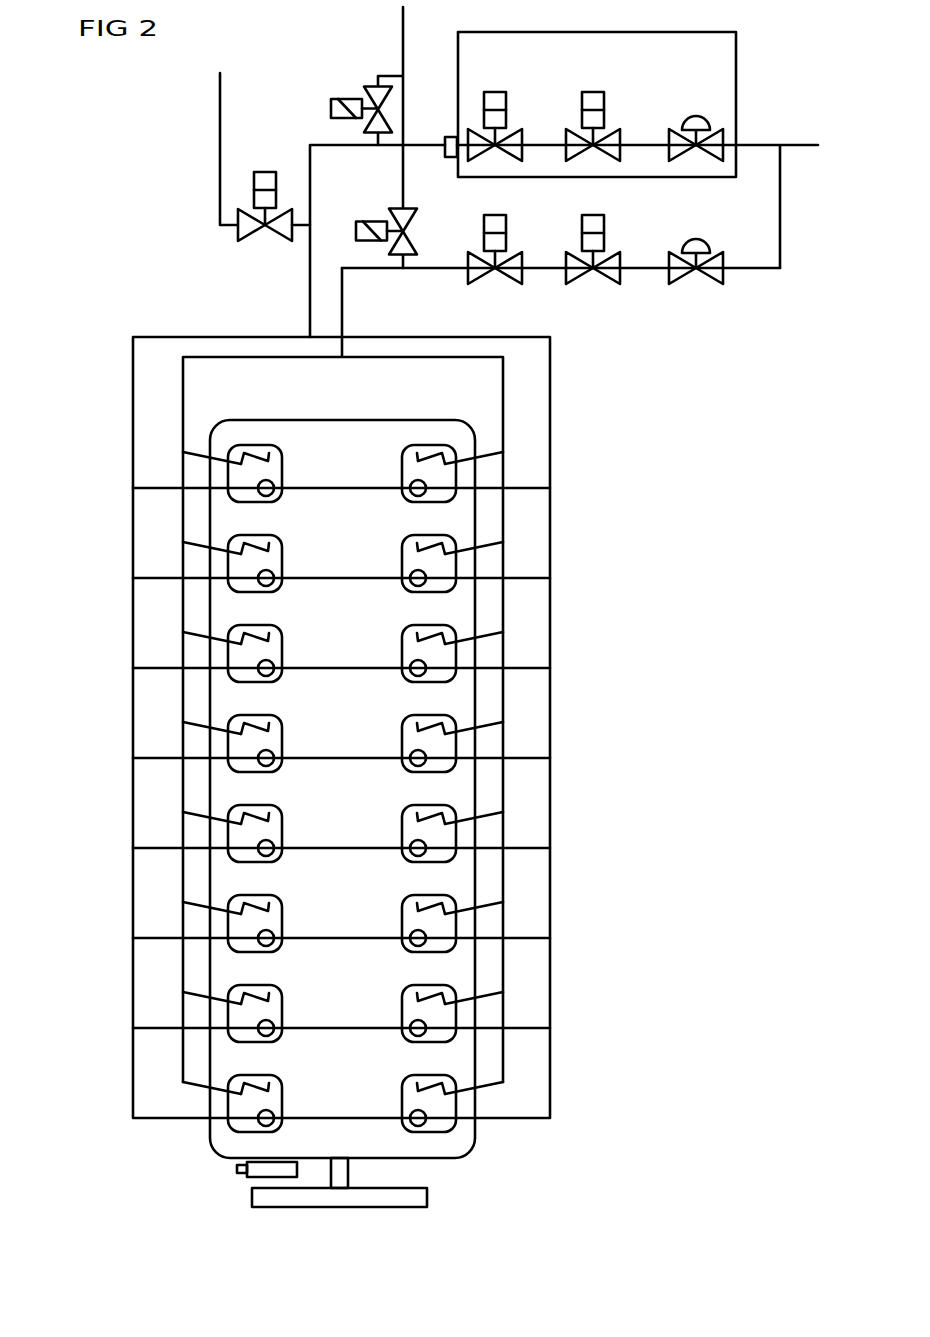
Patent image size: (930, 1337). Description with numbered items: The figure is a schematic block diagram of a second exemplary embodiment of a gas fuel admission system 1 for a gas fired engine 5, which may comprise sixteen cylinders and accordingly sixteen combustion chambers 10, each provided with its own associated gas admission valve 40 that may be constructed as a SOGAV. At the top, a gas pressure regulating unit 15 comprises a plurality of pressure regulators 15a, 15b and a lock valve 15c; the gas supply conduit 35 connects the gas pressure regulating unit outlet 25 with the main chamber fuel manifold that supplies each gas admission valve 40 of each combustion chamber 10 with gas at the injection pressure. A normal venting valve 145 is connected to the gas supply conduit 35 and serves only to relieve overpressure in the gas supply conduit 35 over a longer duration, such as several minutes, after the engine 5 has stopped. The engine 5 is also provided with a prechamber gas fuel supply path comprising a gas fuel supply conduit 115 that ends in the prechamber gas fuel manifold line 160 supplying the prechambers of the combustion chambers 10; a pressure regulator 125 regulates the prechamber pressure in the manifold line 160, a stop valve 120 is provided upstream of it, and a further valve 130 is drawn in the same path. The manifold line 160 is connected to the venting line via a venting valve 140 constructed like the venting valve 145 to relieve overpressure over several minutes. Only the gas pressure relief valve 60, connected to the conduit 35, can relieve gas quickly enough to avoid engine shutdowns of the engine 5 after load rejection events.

The gas fuel admission system 1 is at (519, 167).
The gas fired engine 5 is at (374, 670).
The combustion chamber 10 is at (282, 455).
The gas admission valve 40 is at (282, 488).
The gas pressure regulating unit 15 is at (737, 96).
The pressure regulator 15a is at (496, 92).
The pressure regulator 15b is at (594, 92).
The lock valve 15c is at (698, 115).
The gas pressure regulating unit outlet 25 is at (455, 158).
The gas supply conduit 35 is at (310, 152).
The gas pressure relief valve 60 is at (265, 240).
The gas fuel supply conduit 115 is at (752, 272).
The stop valve 120 is at (705, 280).
The pressure regulator 125 is at (608, 282).
The valve 130 is at (505, 276).
The venting valve 140 is at (403, 208).
The venting valve 145 is at (404, 24).
The prechamber gas fuel manifold line 160 is at (342, 294).